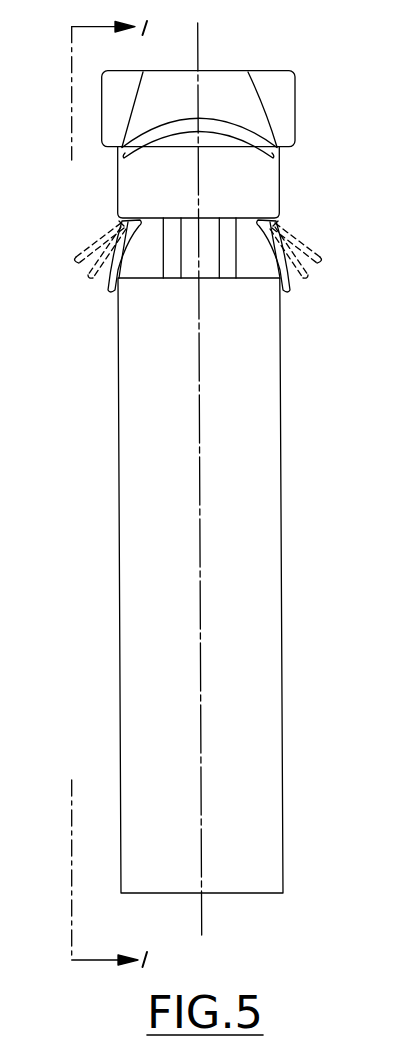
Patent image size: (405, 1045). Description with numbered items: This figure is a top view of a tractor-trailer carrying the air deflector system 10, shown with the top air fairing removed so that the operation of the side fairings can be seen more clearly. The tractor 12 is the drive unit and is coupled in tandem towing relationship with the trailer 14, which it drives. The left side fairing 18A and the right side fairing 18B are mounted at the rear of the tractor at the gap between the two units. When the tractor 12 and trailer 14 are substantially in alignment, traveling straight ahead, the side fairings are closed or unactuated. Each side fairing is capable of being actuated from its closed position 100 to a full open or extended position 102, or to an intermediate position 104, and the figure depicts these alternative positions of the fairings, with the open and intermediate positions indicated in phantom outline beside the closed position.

The air deflector system 10 is at (314, 172).
The tractor 12 is at (287, 92).
The trailer 14 is at (277, 480).
The left side fairing 18A is at (120, 224).
The right side fairing 18B is at (272, 222).
The closed position 100 is at (113, 290).
The full open position 102 is at (75, 252).
The intermediate position 104 is at (90, 277).